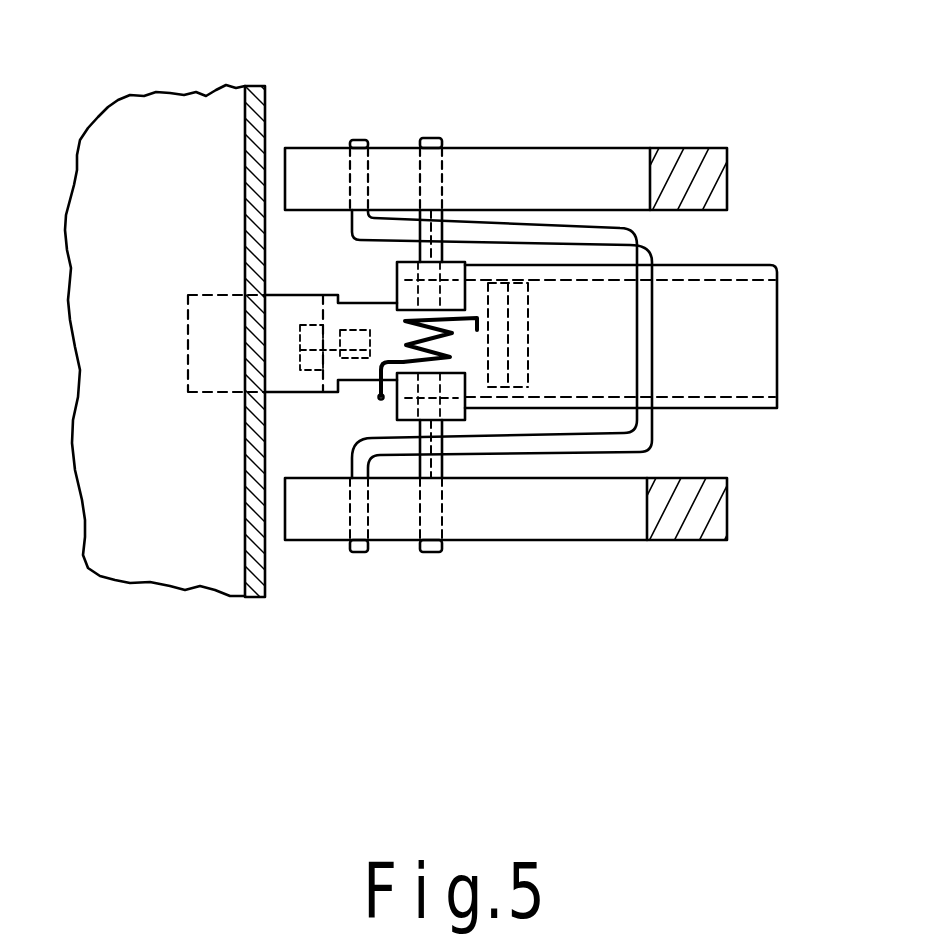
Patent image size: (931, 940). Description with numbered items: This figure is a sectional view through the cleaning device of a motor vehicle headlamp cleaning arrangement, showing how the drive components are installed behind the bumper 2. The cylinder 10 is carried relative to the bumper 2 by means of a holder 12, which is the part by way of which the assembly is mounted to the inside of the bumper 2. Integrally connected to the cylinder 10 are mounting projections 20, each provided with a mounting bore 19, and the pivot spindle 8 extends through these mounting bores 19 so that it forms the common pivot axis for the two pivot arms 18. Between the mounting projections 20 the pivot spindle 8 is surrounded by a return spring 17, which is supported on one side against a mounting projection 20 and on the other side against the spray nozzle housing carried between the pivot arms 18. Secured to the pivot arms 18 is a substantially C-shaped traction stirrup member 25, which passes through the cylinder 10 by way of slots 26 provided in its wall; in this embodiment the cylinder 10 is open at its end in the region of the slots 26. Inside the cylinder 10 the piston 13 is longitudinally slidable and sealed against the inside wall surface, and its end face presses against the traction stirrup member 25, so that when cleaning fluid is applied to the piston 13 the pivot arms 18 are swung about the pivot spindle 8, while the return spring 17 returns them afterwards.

The bumper 2 is at (247, 118).
The pivot spindle 8 is at (440, 147).
The cylinder 10 is at (754, 261).
The holder 12 is at (280, 382).
The piston 13 is at (602, 368).
The return spring 17 is at (380, 382).
The pivot arms 18 is at (705, 165).
The mounting bores 19 is at (430, 295).
The mounting projections 20 is at (405, 262).
The traction stirrup member 25 is at (515, 235).
The slots 26 is at (722, 268).